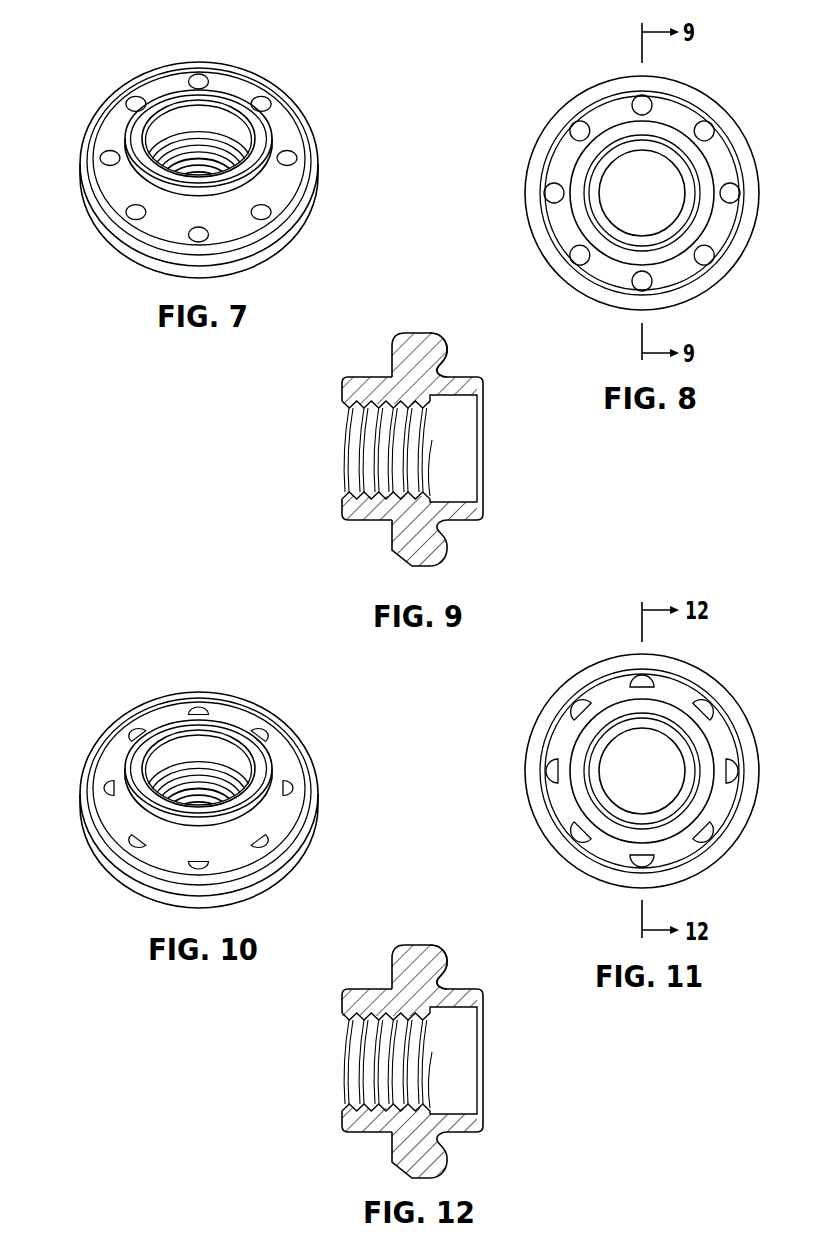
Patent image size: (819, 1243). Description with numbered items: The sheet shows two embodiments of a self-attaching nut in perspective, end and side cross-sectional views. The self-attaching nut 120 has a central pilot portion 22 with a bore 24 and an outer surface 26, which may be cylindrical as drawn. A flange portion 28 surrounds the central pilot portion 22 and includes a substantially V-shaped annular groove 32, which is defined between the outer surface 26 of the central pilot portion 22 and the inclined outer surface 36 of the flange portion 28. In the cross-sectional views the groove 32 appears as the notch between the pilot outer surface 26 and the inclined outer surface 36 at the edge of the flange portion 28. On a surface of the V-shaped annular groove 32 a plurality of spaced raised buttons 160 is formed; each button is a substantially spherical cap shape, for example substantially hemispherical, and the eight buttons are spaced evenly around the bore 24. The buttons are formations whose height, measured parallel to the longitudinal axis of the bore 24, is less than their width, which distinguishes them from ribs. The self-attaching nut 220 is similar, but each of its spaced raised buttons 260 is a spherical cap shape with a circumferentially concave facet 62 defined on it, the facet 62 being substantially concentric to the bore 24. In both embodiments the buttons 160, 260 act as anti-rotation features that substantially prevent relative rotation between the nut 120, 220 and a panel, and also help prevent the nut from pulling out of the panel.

In FIG. 7, the self-attaching nut 120 is at (274, 70).
In FIG. 10, the self-attaching nut 220 is at (274, 700).
In FIG. 7, the central pilot portion 22 is at (118, 119).
In FIG. 7, the bore 24 is at (160, 108).
In FIG. 10, the bore 24 is at (160, 742).
In FIG. 7, the outer surface 26 is at (272, 138).
In FIG. 9, the outer surface 26 is at (460, 528).
In FIG. 10, the outer surface 26 is at (268, 790).
In FIG. 12, the outer surface 26 is at (460, 1140).
In FIG. 9, the flange portion 28 is at (415, 316).
In FIG. 12, the flange portion 28 is at (415, 932).
In FIG. 7, the V-shaped annular groove 32 is at (282, 177).
In FIG. 9, the V-shaped annular groove 32 is at (437, 370).
In FIG. 10, the V-shaped annular groove 32 is at (282, 810).
In FIG. 12, the V-shaped annular groove 32 is at (437, 982).
In FIG. 9, the inclined outer surface 36 is at (447, 348).
In FIG. 12, the inclined outer surface 36 is at (447, 960).
In FIG. 10, the circumferentially concave facet 62 is at (120, 788).
In FIG. 7, the spaced raised buttons 160 is at (100, 157).
In FIG. 8, the spaced raised buttons 160 is at (580, 258).
In FIG. 10, the spaced raised buttons 260 is at (130, 841).
In FIG. 11, the spaced raised buttons 260 is at (580, 838).